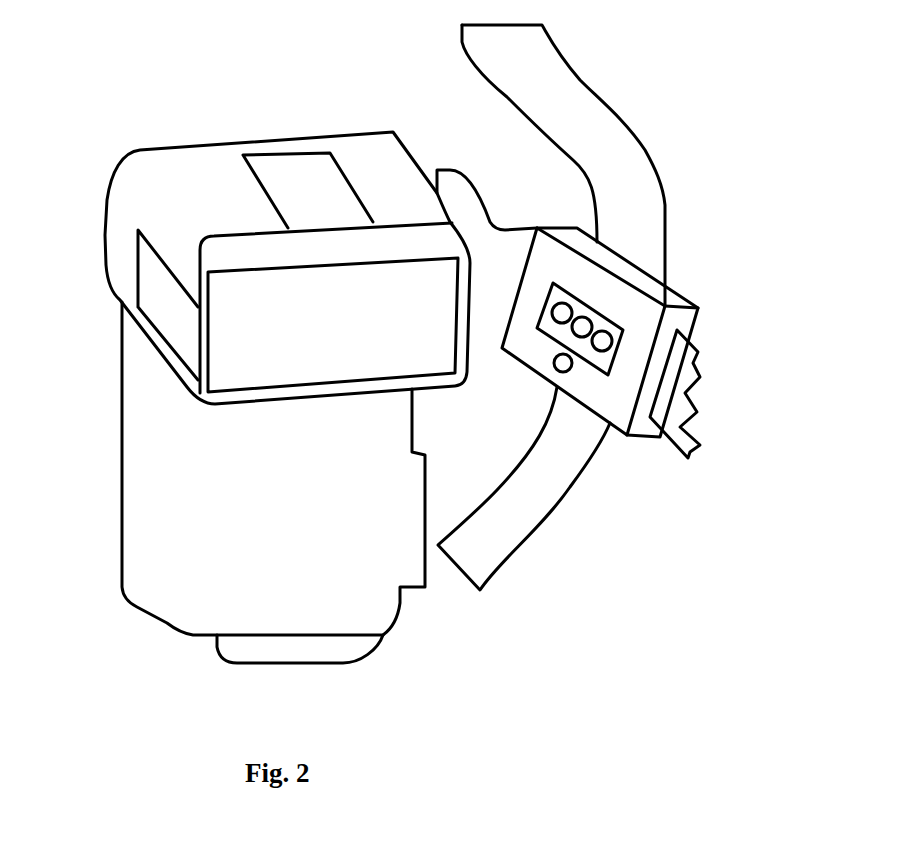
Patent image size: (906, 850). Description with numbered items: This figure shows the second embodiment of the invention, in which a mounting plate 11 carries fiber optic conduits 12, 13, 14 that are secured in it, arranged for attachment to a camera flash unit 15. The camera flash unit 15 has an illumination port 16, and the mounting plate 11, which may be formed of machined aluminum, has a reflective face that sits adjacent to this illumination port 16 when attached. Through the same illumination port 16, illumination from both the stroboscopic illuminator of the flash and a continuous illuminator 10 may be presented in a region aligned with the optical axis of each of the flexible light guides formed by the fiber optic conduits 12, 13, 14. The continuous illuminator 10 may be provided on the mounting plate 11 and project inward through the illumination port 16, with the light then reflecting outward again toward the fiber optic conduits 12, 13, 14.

The continuous illuminator 10 is at (556, 371).
The mounting plate 11 is at (698, 310).
The fiber optic conduit 12 is at (562, 313).
The fiber optic conduit 13 is at (582, 327).
The fiber optic conduit 14 is at (602, 341).
The camera flash unit 15 is at (121, 457).
The illumination port 16 is at (220, 328).